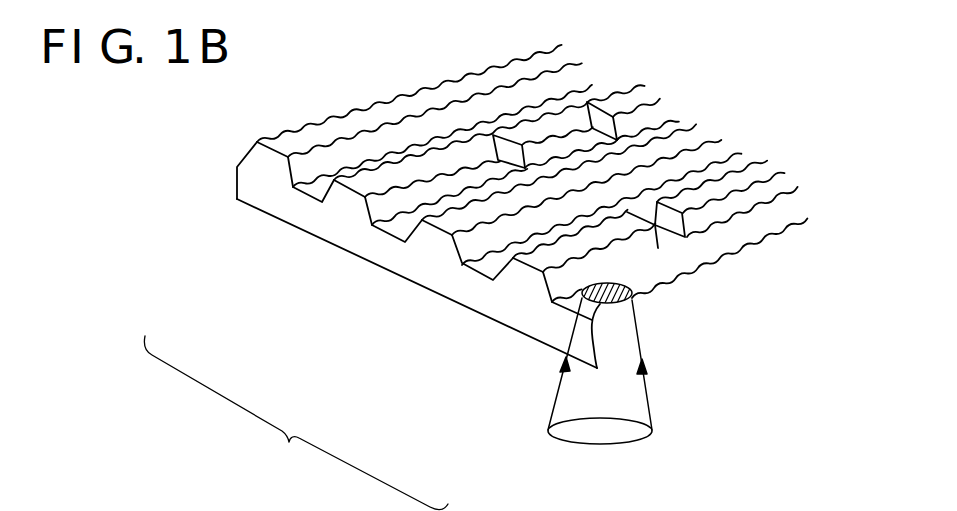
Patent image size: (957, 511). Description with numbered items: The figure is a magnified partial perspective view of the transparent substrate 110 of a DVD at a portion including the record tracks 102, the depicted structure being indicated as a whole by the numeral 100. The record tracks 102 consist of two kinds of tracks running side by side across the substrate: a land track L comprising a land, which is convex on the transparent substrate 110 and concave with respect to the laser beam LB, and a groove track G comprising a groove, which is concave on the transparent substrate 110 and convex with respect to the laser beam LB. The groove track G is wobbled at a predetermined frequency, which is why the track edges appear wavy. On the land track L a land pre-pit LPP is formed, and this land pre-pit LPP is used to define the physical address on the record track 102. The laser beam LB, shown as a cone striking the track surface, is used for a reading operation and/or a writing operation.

The optical disc recording structure 100 is at (535, 255).
The transparent substrate 110 is at (237, 188).
The record tracks 102 is at (296, 423).
The land track L is at (300, 140).
The groove track G is at (318, 188).
The land pre-pit LPP is at (592, 114).
The laser beam LB is at (600, 364).